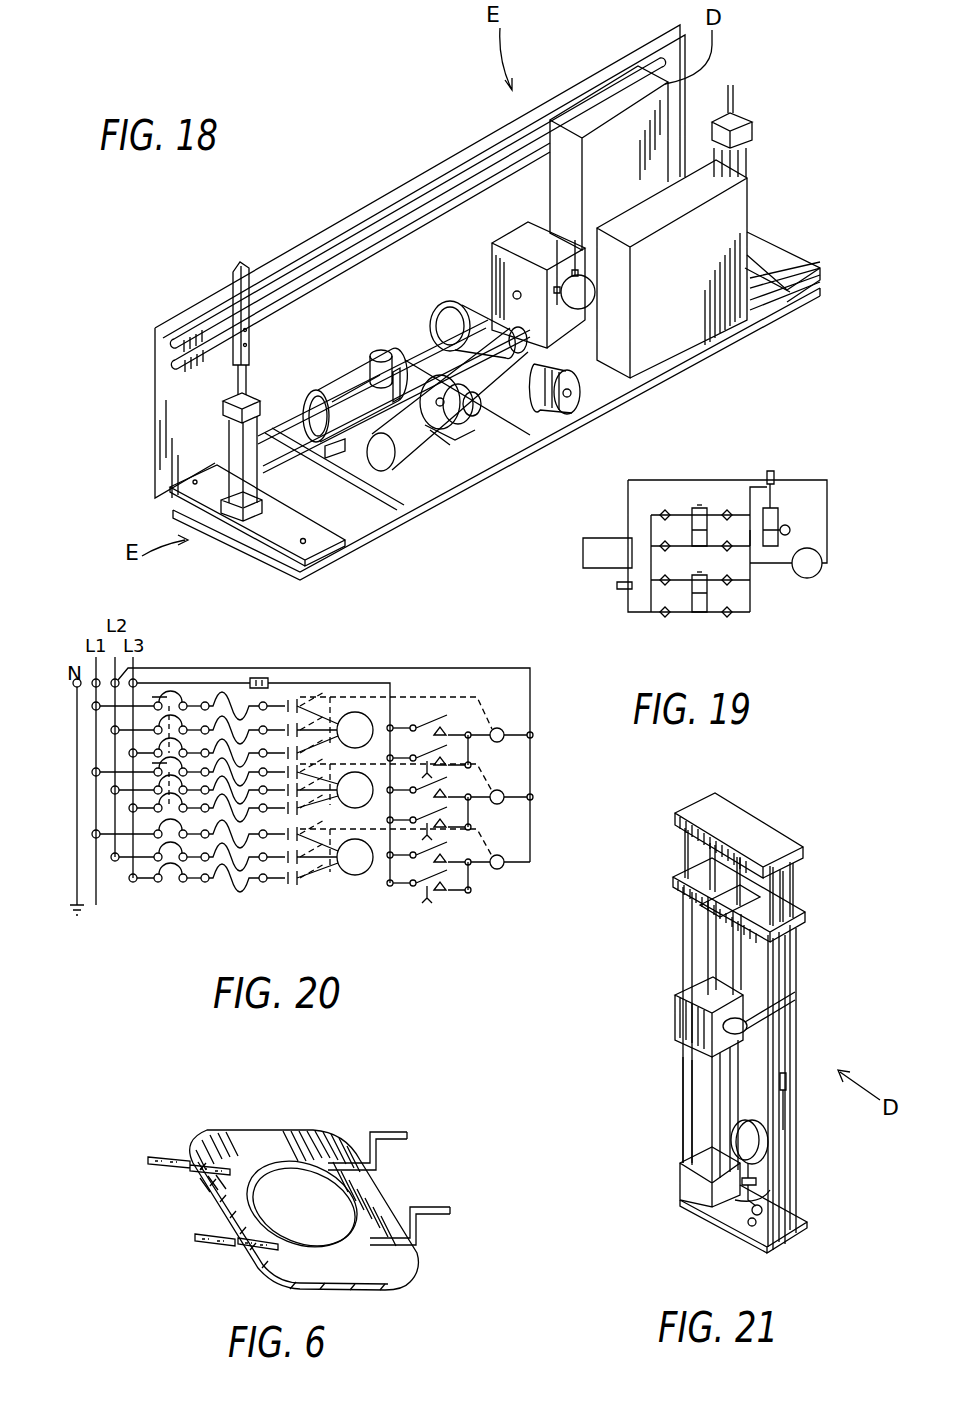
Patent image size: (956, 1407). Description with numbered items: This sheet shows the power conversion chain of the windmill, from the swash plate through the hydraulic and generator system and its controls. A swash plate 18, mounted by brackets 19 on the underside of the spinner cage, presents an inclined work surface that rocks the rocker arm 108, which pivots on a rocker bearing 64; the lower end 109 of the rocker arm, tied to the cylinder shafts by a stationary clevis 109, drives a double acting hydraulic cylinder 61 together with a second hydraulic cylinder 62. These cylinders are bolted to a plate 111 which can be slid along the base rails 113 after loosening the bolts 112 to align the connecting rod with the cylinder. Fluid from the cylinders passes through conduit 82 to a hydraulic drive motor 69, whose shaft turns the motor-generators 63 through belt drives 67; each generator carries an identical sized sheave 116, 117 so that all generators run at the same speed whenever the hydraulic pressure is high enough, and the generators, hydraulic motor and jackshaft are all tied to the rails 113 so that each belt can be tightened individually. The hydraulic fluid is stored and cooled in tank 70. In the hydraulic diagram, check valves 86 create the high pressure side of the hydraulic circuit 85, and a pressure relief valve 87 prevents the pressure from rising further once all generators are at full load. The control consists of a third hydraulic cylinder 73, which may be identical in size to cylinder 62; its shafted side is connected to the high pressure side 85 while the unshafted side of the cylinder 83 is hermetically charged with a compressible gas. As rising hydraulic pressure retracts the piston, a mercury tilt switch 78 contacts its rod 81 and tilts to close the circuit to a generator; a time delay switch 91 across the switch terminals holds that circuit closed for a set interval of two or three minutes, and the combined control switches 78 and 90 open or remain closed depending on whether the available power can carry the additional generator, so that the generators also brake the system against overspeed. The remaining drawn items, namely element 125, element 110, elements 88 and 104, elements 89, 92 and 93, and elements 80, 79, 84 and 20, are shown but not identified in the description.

In FIG. 18, the rocker arm 108 is at (232, 275).
In FIG. 18, the lower end of rocker arm 109 is at (250, 352).
In FIG. 19, the lower end of rocker arm 109 is at (698, 508).
In FIG. 18, the double acting hydraulic cylinder 61 is at (225, 412).
In FIG. 18, the hydraulic cylinder 62 is at (232, 462).
In FIG. 19, the hydraulic cylinder 62 is at (707, 520).
In FIG. 18, the motor-generators 63 is at (318, 400).
In FIG. 18, the hydraulic drive motor 69 is at (386, 350).
In FIG. 19, the hydraulic drive motor 69 is at (820, 572).
In FIG. 18, the tank 70 is at (500, 275).
In FIG. 19, the tank 70 is at (605, 545).
In FIG. 18, the electrical enclosure 125 is at (592, 122).
In FIG. 18, the sheave 117 is at (613, 393).
In FIG. 18, the belt drives 67 is at (523, 443).
In FIG. 18, the rocker bearing 64 is at (450, 450).
In FIG. 18, the sheave 116 is at (387, 455).
In FIG. 18, the plate 111 is at (265, 528).
In FIG. 18, the base plate 110 is at (307, 573).
In FIG. 18, the bolts 112 is at (303, 543).
In FIG. 18, the base rails 113 is at (353, 513).
In FIG. 19, the conduit 82 is at (628, 492).
In FIG. 19, the check valves 86 is at (665, 512).
In FIG. 19, the pressure relief valve 87 is at (768, 478).
In FIG. 19, the rod 81 is at (778, 520).
In FIG. 21, the rod 81 is at (790, 1090).
In FIG. 19, the third hydraulic cylinder 73 is at (790, 534).
In FIG. 21, the third hydraulic cylinder 73 is at (705, 1100).
In FIG. 19, the pressure switch 88 is at (617, 586).
In FIG. 19, the solenoid valve 104 is at (702, 576).
In FIG. 19, the high pressure side of hydraulic circuit 85 is at (752, 535).
In FIG. 21, the high pressure side of hydraulic circuit 85 is at (812, 990).
In FIG. 20, the overload relay 89 is at (186, 704).
In FIG. 20, the control switch 90 is at (300, 704).
In FIG. 20, the time delay switch 91 is at (420, 895).
In FIG. 20, the relay coil 92 is at (505, 740).
In FIG. 20, the neutral line 93 is at (77, 816).
In FIG. 21, the mercury tilt switch 78 is at (805, 900).
In FIG. 21, the guide rod 80 is at (797, 1053).
In FIG. 21, the unshafted side of cylinder 83 is at (770, 1150).
In FIG. 21, the base 79 is at (797, 1207).
In FIG. 21, the fitting 84 is at (750, 1230).
In FIG. 6, the swash plate 18 is at (315, 1130).
In FIG. 6, the brackets 19 is at (407, 1132).
In FIG. 6, the tab 20 is at (165, 1156).